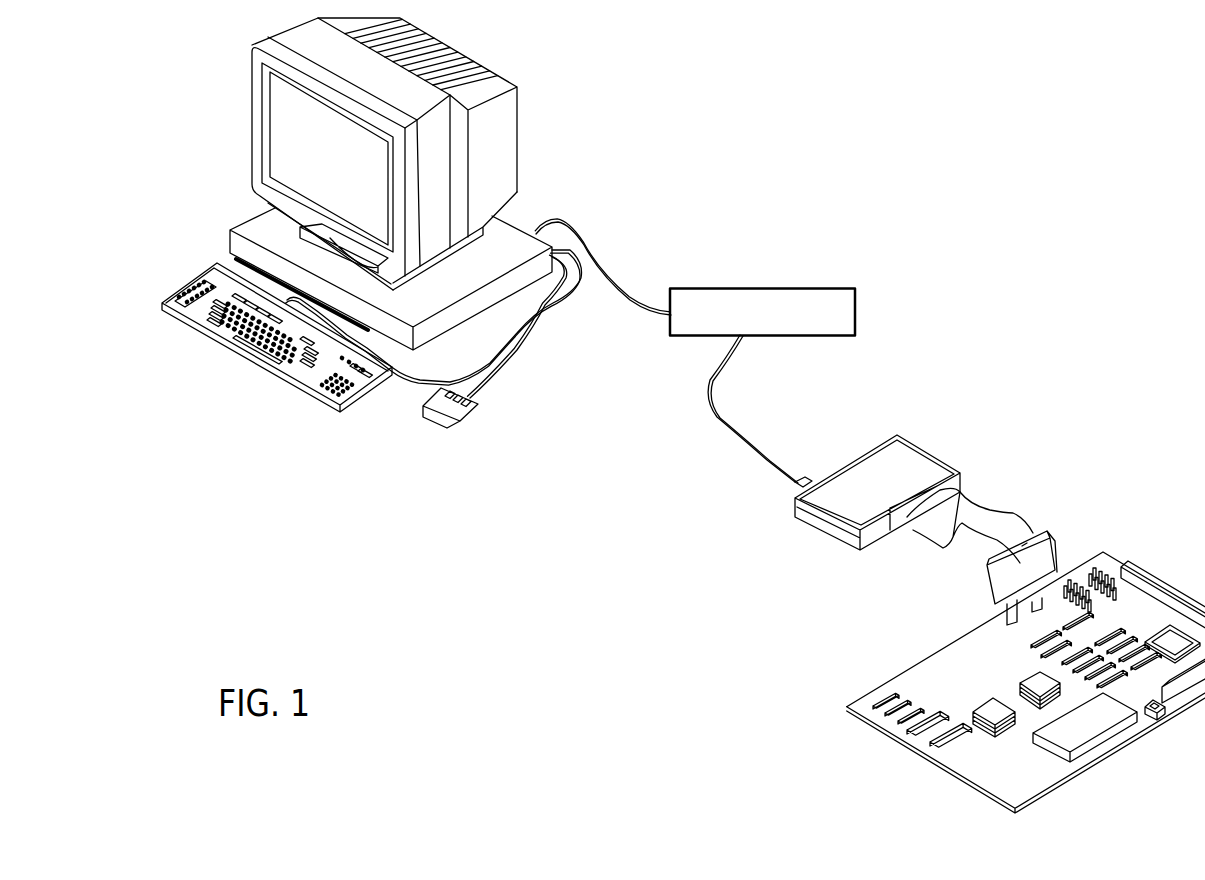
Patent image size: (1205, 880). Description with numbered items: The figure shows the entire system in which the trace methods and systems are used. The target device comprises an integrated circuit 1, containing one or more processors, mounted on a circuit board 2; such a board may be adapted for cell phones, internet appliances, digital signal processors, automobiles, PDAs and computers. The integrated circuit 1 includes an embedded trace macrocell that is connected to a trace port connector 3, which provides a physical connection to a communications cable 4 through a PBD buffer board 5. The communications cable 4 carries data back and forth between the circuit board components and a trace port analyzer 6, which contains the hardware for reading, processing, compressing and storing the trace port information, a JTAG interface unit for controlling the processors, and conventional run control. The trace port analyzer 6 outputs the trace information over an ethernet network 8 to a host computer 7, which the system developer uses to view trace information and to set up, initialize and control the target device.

The integrated circuit 1 is at (1108, 732).
The circuit board 2 is at (1082, 772).
The trace port connector 3 is at (1040, 600).
The communications cable 4 is at (991, 506).
The PBD buffer board 5 is at (1055, 548).
The trace port analyzer 6 is at (928, 453).
The host computer 7 is at (246, 209).
The ethernet network 8 is at (858, 318).